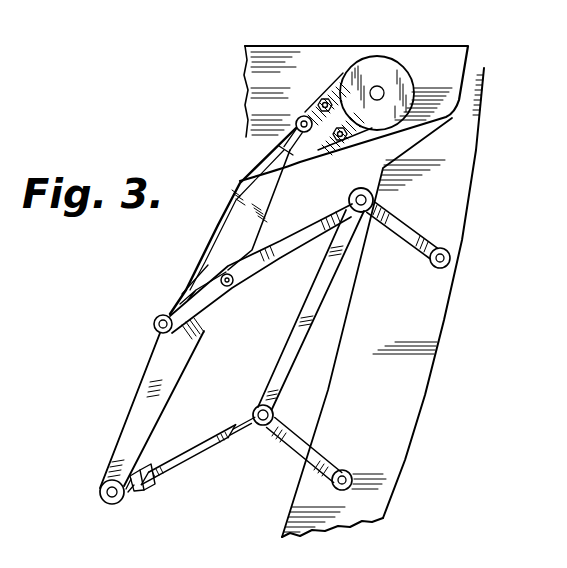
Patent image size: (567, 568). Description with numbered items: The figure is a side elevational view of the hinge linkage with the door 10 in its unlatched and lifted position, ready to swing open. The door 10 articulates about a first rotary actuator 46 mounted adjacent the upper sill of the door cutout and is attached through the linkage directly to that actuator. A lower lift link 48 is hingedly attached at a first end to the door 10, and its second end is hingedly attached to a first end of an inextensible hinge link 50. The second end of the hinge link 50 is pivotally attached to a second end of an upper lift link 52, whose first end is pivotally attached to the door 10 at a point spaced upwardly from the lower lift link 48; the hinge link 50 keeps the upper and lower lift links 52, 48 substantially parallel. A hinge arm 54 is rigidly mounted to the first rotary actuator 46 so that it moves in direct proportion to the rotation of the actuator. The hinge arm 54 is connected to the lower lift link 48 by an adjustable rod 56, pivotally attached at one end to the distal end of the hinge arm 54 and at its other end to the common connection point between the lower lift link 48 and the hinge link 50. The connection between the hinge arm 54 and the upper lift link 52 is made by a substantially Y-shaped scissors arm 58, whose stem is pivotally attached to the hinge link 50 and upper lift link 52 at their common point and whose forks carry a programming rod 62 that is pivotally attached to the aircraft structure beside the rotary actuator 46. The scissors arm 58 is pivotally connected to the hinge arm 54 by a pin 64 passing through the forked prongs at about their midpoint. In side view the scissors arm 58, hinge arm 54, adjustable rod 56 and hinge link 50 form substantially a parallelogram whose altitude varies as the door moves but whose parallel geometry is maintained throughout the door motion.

The door 10 is at (457, 223).
The first rotary actuator 46 is at (381, 62).
The lower lift link 48 is at (282, 433).
The inextensible hinge link 50 is at (288, 352).
The upper lift link 52 is at (386, 211).
The hinge arm 54 is at (138, 402).
The adjustable rod 56 is at (170, 475).
The scissors arm 58 is at (275, 260).
The programming rod 62 is at (220, 243).
The pin 64 is at (229, 290).